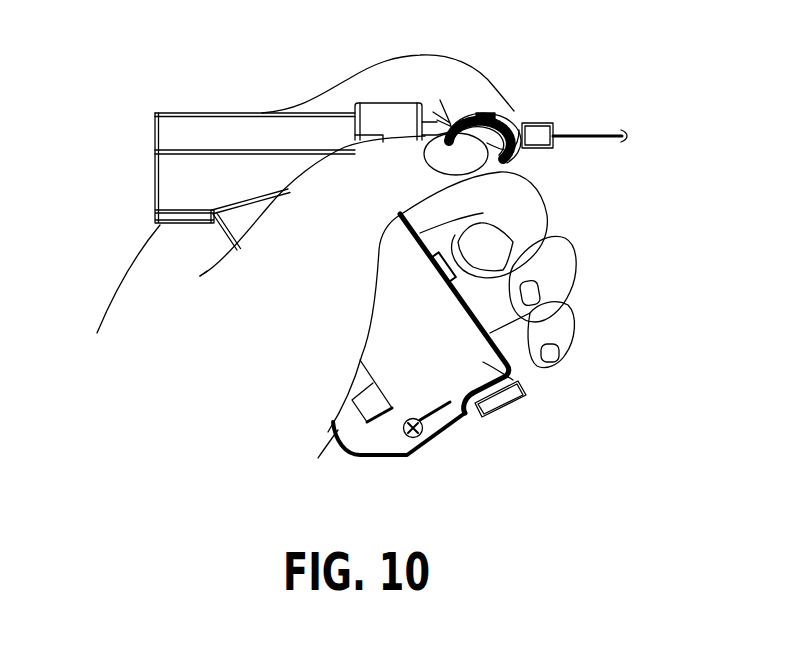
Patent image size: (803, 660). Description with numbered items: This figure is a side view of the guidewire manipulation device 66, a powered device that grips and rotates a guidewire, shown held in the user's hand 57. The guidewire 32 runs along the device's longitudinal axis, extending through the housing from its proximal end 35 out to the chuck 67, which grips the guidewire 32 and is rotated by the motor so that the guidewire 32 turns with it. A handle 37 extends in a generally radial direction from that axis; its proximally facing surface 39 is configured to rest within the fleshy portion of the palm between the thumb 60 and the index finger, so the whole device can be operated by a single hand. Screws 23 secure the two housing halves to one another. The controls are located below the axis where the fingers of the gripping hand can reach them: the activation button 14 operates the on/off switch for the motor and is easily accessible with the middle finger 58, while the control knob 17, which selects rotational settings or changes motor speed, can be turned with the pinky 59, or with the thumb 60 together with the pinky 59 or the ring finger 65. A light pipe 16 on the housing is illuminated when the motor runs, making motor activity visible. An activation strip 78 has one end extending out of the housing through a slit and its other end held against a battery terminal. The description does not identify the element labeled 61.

The activation button 14 is at (457, 280).
The light pipe 16 is at (505, 165).
The control knob 17 is at (505, 406).
The screws 23 is at (407, 438).
The guidewire 32 is at (587, 134).
The proximal end 35 is at (155, 114).
The handle 37 is at (512, 374).
The proximally facing surface 39 is at (343, 440).
The hand 57 is at (202, 320).
The middle finger 58 is at (523, 210).
The pinky 59 is at (562, 328).
The thumb 60 is at (407, 157).
The thumb 61 is at (500, 87).
The ring finger 65 is at (563, 266).
The guidewire manipulation device 66 is at (217, 114).
The chuck 67 is at (517, 113).
The activation strip 78 is at (372, 383).